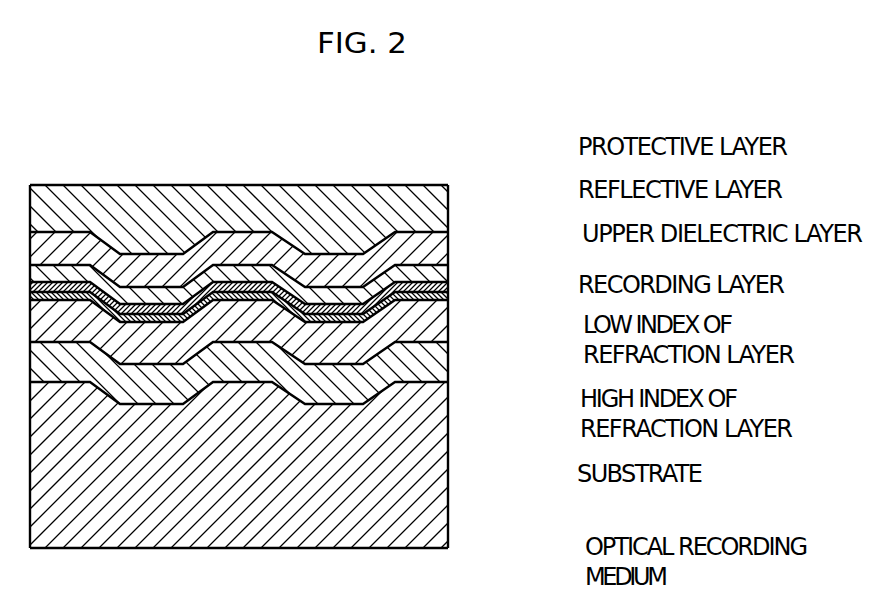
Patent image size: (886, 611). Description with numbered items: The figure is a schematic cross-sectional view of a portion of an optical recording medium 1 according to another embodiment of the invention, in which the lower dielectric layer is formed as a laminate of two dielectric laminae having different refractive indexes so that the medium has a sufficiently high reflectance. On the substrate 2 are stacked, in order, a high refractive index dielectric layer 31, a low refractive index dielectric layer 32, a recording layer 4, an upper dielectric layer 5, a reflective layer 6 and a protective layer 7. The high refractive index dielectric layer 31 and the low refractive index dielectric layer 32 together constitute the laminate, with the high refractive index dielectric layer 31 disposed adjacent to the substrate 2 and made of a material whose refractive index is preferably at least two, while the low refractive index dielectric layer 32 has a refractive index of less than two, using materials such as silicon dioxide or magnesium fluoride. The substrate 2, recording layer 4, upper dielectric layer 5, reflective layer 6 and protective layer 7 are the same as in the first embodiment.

The optical recording medium 1 is at (402, 349).
The substrate 2 is at (440, 455).
The high refractive index dielectric layer 31 is at (440, 360).
The low refractive index dielectric layer 32 is at (440, 332).
The recording layer 4 is at (456, 282).
The upper dielectric layer 5 is at (449, 267).
The reflective layer 6 is at (440, 245).
The protective layer 7 is at (440, 197).